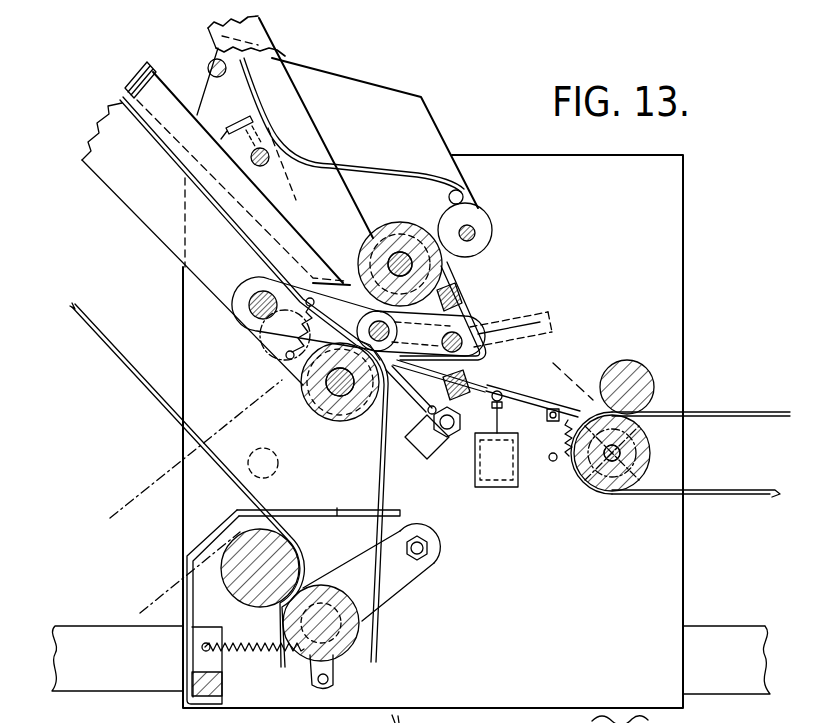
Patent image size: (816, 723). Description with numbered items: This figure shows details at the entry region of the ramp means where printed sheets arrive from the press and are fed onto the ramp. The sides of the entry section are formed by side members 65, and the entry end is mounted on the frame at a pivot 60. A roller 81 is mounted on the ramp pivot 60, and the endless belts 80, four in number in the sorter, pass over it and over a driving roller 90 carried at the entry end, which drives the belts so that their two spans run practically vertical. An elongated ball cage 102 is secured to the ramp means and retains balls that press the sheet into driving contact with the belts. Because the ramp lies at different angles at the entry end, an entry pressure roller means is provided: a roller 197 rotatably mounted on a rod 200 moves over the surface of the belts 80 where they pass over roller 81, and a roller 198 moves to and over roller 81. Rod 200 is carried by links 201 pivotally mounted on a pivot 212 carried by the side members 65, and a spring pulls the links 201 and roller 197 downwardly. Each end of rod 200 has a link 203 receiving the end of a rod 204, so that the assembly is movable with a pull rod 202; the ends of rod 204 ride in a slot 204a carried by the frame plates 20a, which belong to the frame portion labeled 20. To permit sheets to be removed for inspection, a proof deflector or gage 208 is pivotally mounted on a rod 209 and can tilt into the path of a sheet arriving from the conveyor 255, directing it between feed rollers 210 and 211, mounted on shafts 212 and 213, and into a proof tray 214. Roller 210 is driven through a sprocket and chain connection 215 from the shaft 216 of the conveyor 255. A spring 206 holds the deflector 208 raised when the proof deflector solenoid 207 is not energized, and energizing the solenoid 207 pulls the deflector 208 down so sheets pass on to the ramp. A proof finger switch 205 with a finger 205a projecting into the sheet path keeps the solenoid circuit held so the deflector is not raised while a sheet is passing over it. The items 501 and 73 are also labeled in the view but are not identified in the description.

The sheet 20 is at (60, 642).
The frame plates 20a is at (681, 227).
The pivot 60 is at (305, 397).
The side members 65 is at (125, 203).
The lower roller assembly 73 is at (294, 623).
The belts 80 is at (168, 152).
The roller 81 is at (327, 418).
The driving roller 90 is at (238, 545).
The elongated ball cage 102 is at (150, 153).
The entry pressure roller 197 is at (378, 430).
The entry pressure roller 198 is at (500, 323).
The rod 200 is at (360, 272).
The links 201 is at (240, 318).
The pull rod 202 is at (263, 290).
The link 203 is at (490, 344).
The rod 204 is at (513, 333).
The slot 204a is at (500, 298).
The proof finger switch 205 is at (448, 436).
The finger 205a is at (411, 435).
The spring 206 is at (565, 462).
The proof deflector solenoid 207 is at (473, 478).
The proof deflector 208 is at (546, 349).
The rod 209 is at (548, 440).
The feed roller 210 is at (376, 225).
The feed roller 211 is at (480, 215).
The shaft 212 is at (405, 250).
The shaft 213 is at (476, 232).
The proof tray 214 is at (314, 115).
The sprocket and chain connection 215 is at (445, 270).
The shaft 216 is at (630, 460).
The conveyor 255 is at (740, 415).
The solenoid housing 501 is at (503, 477).